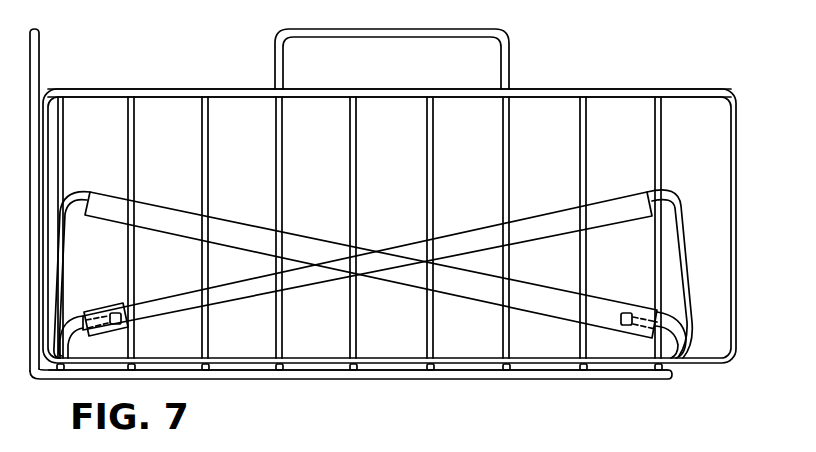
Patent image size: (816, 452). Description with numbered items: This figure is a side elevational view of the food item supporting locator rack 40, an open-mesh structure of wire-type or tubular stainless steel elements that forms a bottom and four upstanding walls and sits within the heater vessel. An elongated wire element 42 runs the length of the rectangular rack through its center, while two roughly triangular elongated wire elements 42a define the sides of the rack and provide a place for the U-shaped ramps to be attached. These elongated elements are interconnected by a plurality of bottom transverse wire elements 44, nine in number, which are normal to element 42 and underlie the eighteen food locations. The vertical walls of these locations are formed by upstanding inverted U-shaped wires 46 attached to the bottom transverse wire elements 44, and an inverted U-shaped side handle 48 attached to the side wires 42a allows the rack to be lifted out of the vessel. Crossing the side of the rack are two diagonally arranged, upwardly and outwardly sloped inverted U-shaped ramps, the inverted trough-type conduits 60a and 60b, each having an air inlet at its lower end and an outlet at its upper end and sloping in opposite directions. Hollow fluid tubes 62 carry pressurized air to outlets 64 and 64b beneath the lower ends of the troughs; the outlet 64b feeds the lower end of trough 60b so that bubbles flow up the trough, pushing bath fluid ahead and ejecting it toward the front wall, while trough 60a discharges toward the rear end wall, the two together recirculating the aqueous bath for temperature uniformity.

The locator rack 40 is at (556, 90).
The elongated wire element 42 is at (609, 363).
The triangular elongated wire elements 42a is at (641, 90).
The bottom transverse wire elements 44 is at (364, 373).
The upstanding inverted U-shaped wires 46 is at (435, 150).
The inverted U-shaped side handles 48 is at (508, 29).
The inverted trough-type conduit 60a is at (405, 278).
The inverted trough-type tube 60b is at (302, 287).
The lower bar 62 is at (535, 378).
The pivot clip 64 is at (627, 326).
The outlet 64b is at (112, 317).